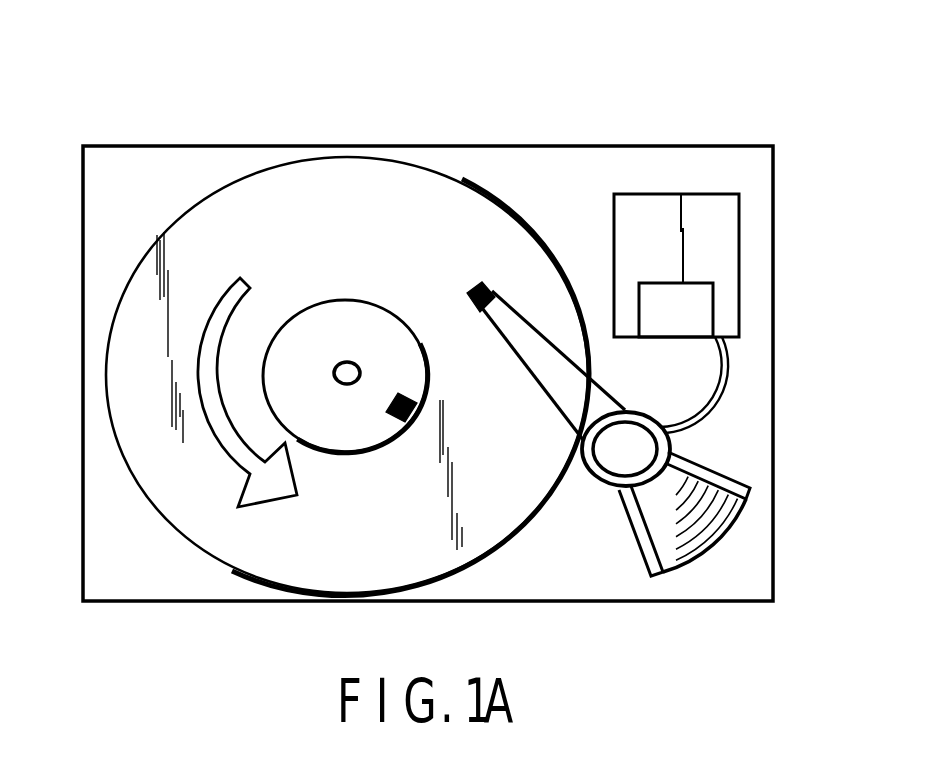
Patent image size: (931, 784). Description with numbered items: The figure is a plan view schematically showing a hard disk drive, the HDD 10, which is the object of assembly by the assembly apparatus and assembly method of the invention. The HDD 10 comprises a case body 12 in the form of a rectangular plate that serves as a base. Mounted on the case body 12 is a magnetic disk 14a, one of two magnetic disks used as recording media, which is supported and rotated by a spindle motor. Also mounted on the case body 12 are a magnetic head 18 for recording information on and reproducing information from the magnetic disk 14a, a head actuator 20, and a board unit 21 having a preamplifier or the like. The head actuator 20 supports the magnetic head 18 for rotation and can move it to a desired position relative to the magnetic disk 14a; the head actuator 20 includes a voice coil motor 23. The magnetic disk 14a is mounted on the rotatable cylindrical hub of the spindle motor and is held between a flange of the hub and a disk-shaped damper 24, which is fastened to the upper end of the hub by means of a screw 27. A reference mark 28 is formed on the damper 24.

The HDD 10 is at (564, 124).
The case body 12 is at (585, 582).
The magnetic disk 14a is at (360, 193).
The magnetic head 18 is at (482, 288).
The head actuator 20 is at (556, 393).
The board unit 21 is at (735, 256).
The voice coil motor 23 is at (745, 518).
The damper 24 is at (321, 317).
The screw 27 is at (349, 362).
The reference mark 28 is at (397, 420).